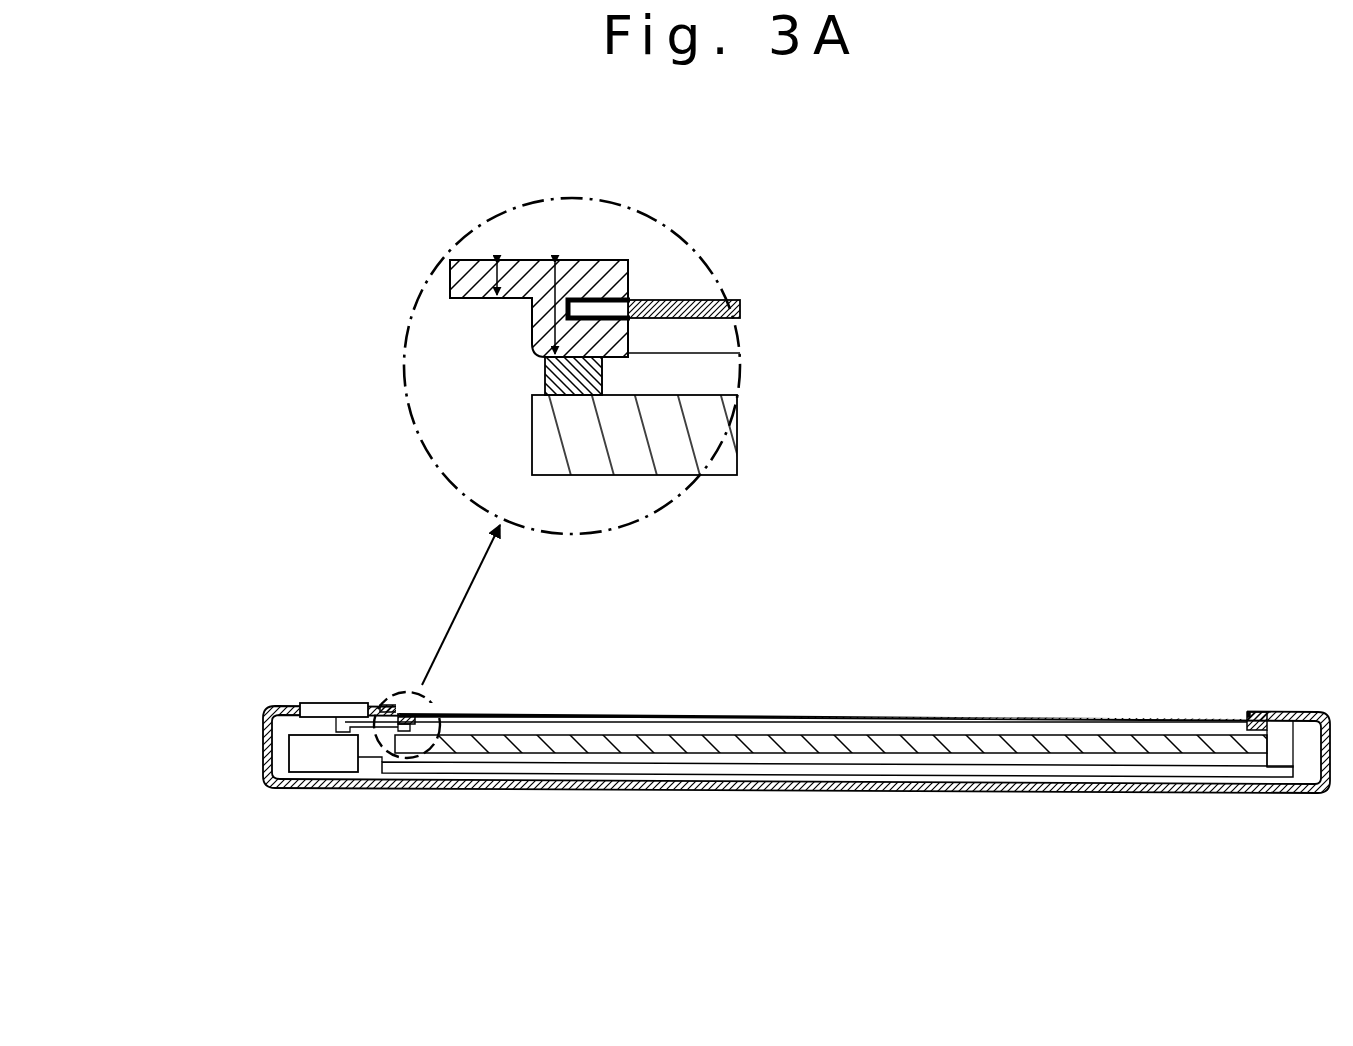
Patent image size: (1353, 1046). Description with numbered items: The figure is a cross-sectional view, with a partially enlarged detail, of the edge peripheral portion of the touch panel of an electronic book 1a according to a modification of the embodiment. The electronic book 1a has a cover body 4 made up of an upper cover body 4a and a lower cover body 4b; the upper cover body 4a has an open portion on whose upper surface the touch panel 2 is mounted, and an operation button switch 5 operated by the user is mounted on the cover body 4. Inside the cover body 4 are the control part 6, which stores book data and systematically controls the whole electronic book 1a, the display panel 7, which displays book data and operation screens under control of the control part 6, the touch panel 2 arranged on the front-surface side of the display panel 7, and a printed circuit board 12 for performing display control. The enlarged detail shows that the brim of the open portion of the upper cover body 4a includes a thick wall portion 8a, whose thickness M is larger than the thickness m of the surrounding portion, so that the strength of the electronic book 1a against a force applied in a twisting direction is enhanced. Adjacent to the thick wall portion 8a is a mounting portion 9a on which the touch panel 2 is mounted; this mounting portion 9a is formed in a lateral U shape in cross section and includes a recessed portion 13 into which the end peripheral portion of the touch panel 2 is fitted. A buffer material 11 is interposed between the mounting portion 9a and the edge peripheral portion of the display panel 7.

The electronic book 1a is at (972, 576).
The touch panel 2 is at (738, 307).
The cover body 4 is at (158, 655).
The upper cover body 4a is at (450, 262).
The lower cover body 4b is at (264, 763).
The operation button switch 5 is at (335, 702).
The control part 6 is at (322, 770).
The display panel 7 is at (702, 443).
The thick wall portion 8a is at (514, 343).
The mounting portion 9a is at (606, 336).
The buffer material 11 is at (545, 375).
The printed circuit board 12 is at (1283, 768).
The recessed portion 13 is at (638, 307).
The thickness of the portion around the thick wall portion m is at (483, 260).
The thickness of the thick wall portion M is at (544, 260).